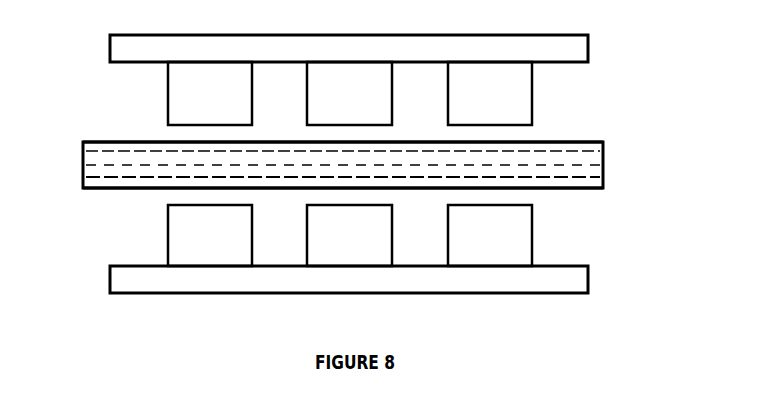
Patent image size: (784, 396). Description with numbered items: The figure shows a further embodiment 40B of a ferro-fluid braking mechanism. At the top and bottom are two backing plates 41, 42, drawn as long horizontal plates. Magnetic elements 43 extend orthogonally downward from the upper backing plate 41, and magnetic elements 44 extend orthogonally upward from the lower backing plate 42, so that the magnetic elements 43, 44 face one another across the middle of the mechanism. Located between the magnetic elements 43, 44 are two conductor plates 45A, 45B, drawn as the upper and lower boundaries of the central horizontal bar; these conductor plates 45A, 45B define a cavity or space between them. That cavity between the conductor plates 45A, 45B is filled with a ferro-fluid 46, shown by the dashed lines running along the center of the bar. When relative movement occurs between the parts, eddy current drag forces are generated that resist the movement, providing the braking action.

The braking mechanism embodiment 40B is at (66, 166).
The backing plate 41 is at (328, 31).
The backing plate 42 is at (327, 292).
The magnetic elements 43 is at (350, 65).
The magnetic elements 44 is at (350, 262).
The conductor plate 45A is at (375, 118).
The conductor plate 45B is at (374, 202).
The ferro-fluid 46 is at (587, 164).